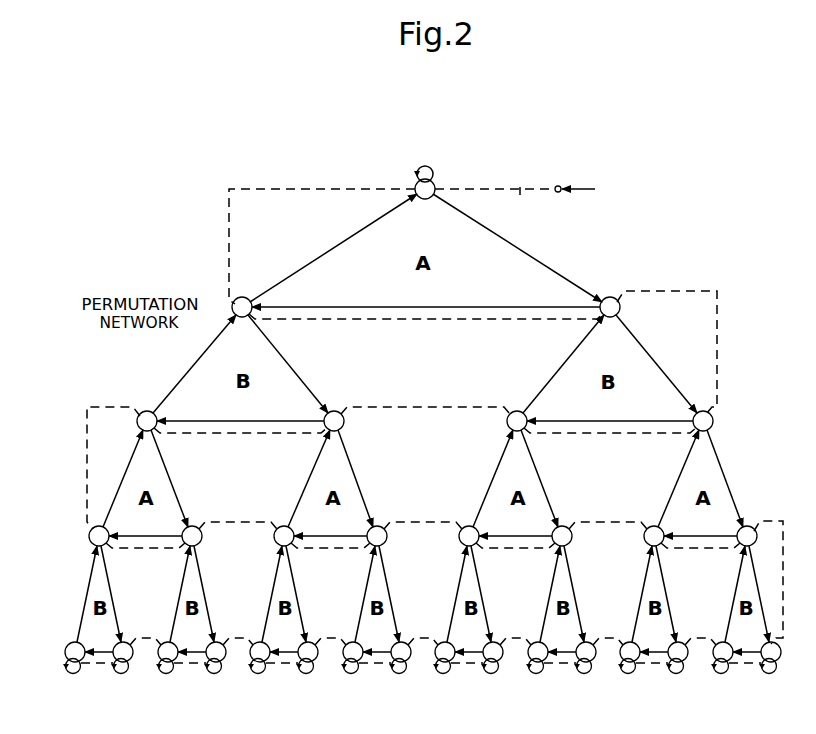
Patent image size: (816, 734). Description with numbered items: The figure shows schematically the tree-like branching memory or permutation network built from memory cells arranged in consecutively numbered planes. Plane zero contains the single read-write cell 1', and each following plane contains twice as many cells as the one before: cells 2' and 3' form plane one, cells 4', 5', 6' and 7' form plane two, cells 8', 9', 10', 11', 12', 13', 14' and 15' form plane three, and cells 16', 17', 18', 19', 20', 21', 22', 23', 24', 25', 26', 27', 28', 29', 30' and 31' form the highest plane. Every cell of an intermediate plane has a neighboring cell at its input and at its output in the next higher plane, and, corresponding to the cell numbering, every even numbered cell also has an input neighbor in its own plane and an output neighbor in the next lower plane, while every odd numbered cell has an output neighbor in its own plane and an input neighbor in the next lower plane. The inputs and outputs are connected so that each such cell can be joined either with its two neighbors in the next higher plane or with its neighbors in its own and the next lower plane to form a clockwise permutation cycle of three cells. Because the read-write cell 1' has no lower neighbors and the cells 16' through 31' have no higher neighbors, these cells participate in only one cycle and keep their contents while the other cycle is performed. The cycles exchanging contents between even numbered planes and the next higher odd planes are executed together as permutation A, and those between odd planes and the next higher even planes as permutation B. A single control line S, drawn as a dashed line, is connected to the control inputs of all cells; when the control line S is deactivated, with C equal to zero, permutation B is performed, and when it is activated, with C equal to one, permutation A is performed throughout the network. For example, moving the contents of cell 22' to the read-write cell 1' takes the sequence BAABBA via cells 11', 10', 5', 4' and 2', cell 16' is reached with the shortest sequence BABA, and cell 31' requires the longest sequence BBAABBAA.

The read-write cell 1' is at (425, 201).
The memory cell 2' is at (242, 322).
The memory cell 3' is at (610, 321).
The memory cell 4' is at (160, 411).
The memory cell 5' is at (320, 411).
The memory cell 6' is at (530, 411).
The memory cell 7' is at (690, 411).
The memory cell 8' is at (109, 524).
The memory cell 9' is at (181, 524).
The memory cell 10' is at (297, 524).
The memory cell 11' is at (363, 524).
The memory cell 12' is at (482, 524).
The memory cell 13' is at (548, 524).
The memory cell 14' is at (667, 524).
The memory cell 15' is at (733, 524).
The memory cell 16' is at (79, 674).
The memory cell 17' is at (127, 674).
The memory cell 18' is at (172, 674).
The memory cell 19' is at (220, 674).
The memory cell 20' is at (264, 674).
The memory cell 21' is at (312, 674).
The memory cell 22' is at (357, 674).
The memory cell 23' is at (405, 674).
The memory cell 24' is at (449, 674).
The memory cell 25' is at (497, 674).
The memory cell 26' is at (542, 674).
The memory cell 27' is at (590, 674).
The memory cell 28' is at (634, 674).
The memory cell 29' is at (682, 674).
The memory cell 30' is at (727, 674).
The memory cell 31' is at (775, 674).
The control signal C is at (588, 189).
The control line S is at (498, 204).